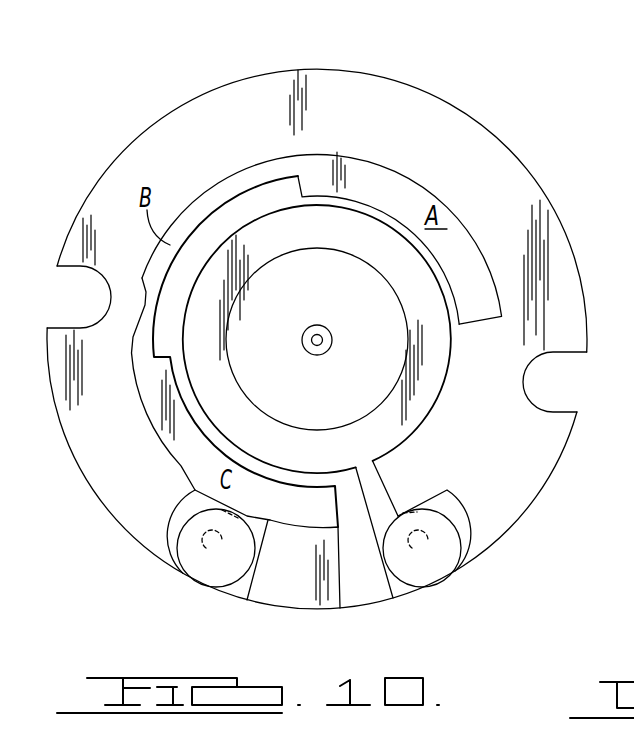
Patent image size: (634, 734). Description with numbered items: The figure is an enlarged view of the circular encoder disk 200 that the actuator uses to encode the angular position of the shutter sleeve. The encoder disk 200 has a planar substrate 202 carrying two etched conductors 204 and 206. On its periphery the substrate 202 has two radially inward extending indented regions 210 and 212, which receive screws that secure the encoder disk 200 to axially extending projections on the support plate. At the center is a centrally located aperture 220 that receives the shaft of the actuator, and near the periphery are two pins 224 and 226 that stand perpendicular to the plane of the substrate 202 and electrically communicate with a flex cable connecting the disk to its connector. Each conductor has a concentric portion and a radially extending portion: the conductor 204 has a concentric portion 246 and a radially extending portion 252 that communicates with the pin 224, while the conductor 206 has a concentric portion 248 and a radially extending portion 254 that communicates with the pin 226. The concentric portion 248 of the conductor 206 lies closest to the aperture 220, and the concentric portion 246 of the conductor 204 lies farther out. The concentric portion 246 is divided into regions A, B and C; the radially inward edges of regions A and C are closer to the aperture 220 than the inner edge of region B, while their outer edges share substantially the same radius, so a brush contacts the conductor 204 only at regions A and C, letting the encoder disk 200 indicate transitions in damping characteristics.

The encoder disk 200 is at (384, 78).
The planar substrate 202 is at (470, 130).
The etched conductor 204 is at (486, 258).
The etched conductor 206 is at (412, 447).
The indented region 210 is at (527, 373).
The indented region 212 is at (110, 302).
The centrally located aperture 220 is at (316, 325).
The pin 224 is at (216, 548).
The pin 226 is at (422, 548).
The concentric portion 246 is at (183, 210).
The concentric portion 248 is at (280, 207).
The radially extending portion 252 is at (173, 520).
The radially extending portion 254 is at (408, 592).